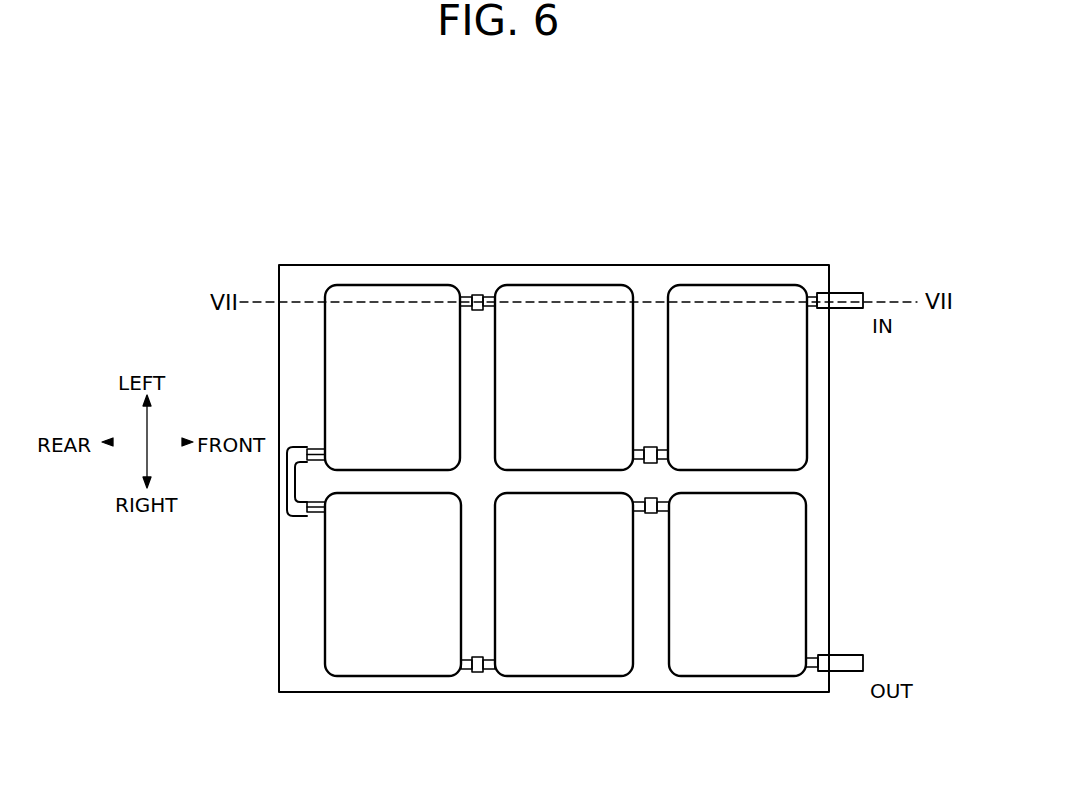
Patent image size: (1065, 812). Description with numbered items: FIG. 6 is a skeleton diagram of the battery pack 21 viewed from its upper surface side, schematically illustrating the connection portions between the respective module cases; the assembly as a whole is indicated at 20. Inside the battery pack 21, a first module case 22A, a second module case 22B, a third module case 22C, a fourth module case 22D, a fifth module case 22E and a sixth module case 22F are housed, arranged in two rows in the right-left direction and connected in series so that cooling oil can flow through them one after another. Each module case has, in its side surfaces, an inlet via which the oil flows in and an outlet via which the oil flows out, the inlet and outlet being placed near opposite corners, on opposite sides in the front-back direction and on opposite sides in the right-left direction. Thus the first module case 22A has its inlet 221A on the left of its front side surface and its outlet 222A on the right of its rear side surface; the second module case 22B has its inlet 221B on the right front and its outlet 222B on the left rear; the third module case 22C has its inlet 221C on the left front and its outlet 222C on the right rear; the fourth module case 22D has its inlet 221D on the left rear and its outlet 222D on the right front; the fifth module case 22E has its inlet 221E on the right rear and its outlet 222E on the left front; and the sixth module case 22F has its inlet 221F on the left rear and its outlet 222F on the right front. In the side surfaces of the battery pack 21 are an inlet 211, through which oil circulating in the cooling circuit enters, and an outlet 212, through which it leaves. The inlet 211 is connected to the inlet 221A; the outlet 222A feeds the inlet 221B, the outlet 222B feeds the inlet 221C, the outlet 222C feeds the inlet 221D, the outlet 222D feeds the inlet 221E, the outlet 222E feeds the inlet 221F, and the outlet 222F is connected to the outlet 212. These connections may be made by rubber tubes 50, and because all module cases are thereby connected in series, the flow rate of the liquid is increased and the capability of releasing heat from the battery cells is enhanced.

The battery pack 20 is at (561, 448).
The battery pack 21 is at (837, 497).
The inlet 211 is at (836, 293).
The outlet 212 is at (841, 655).
The first module case 22A is at (737, 280).
The second module case 22B is at (560, 280).
The third module case 22C is at (390, 280).
The fourth module case 22D is at (374, 680).
The fifth module case 22E is at (576, 680).
The sixth module case 22F is at (757, 680).
The inlet 221A is at (811, 309).
The inlet 221B is at (641, 447).
The inlet 221C is at (465, 296).
The inlet 221D is at (318, 512).
The inlet 221E is at (488, 672).
The inlet 221F is at (658, 514).
The outlet 222A is at (659, 447).
The outlet 222B is at (486, 294).
The outlet 222C is at (318, 449).
The outlet 222D is at (466, 673).
The outlet 222E is at (645, 514).
The outlet 222F is at (809, 672).
The rubber tube 50 is at (477, 674).